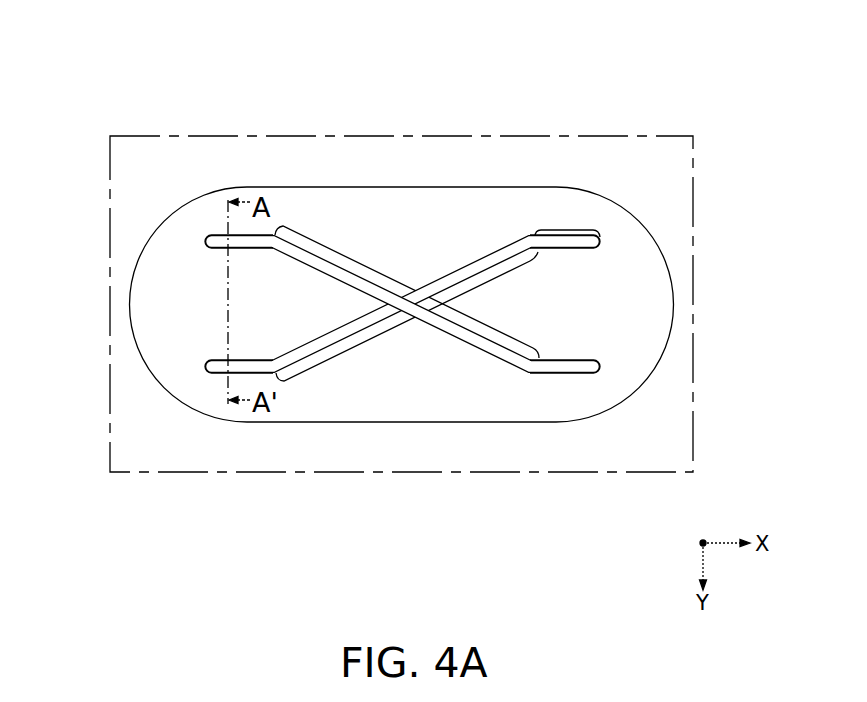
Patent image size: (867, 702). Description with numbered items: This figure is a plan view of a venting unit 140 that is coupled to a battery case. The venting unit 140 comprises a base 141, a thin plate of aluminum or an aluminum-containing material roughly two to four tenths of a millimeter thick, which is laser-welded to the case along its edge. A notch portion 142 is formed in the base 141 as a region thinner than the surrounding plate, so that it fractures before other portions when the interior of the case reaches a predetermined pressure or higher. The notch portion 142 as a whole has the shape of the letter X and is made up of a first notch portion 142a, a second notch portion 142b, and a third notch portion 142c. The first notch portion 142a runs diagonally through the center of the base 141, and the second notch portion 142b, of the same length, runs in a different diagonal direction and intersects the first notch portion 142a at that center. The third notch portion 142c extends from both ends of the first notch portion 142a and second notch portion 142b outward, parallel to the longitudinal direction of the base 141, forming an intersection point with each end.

The venting unit 140 is at (213, 46).
The base 141 is at (648, 307).
The notch portion 142 is at (412, 346).
The first notch portion 142a is at (410, 320).
The second notch portion 142b is at (408, 285).
The third notch portion 142c is at (206, 246).